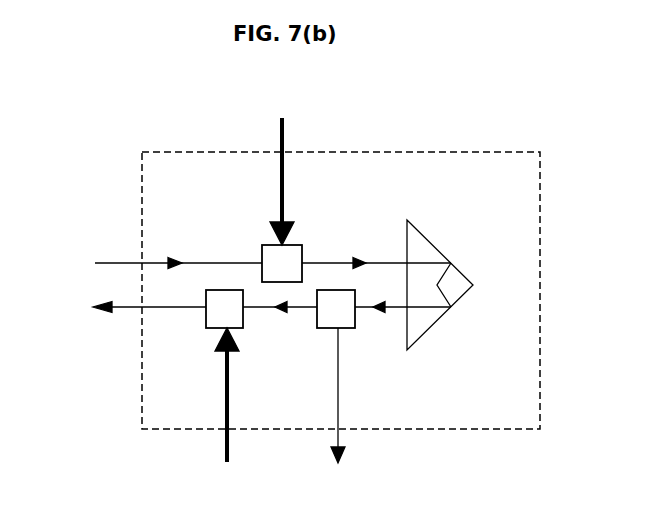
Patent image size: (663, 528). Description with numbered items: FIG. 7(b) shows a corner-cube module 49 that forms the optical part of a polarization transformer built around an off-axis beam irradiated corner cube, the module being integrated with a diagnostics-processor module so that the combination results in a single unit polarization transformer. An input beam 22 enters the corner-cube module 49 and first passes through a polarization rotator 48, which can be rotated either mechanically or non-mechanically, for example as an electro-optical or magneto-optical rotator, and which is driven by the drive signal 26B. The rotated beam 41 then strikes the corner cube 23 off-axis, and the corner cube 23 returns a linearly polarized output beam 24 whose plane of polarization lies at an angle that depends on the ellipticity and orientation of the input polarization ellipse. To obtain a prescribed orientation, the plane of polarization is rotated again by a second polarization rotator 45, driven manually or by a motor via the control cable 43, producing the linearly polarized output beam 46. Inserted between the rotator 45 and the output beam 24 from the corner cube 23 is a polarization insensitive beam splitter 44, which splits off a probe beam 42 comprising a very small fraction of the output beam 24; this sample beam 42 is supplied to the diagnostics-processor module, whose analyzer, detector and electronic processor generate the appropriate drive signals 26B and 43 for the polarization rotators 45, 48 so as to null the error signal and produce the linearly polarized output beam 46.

The input beam 22 is at (154, 264).
The drive signal 26B is at (284, 163).
The polarization rotator 48 is at (263, 250).
The beam 41 is at (375, 262).
The corner cube 23 is at (443, 318).
The output beam 24 is at (360, 309).
The polarization insensitive beam splitter 44 is at (317, 317).
The polarization rotator 45 is at (206, 317).
The linearly polarized output beam 46 is at (126, 309).
The control cable 43 is at (227, 417).
The split-off probe beam 42 is at (339, 417).
The corner-cube module 49 is at (541, 354).